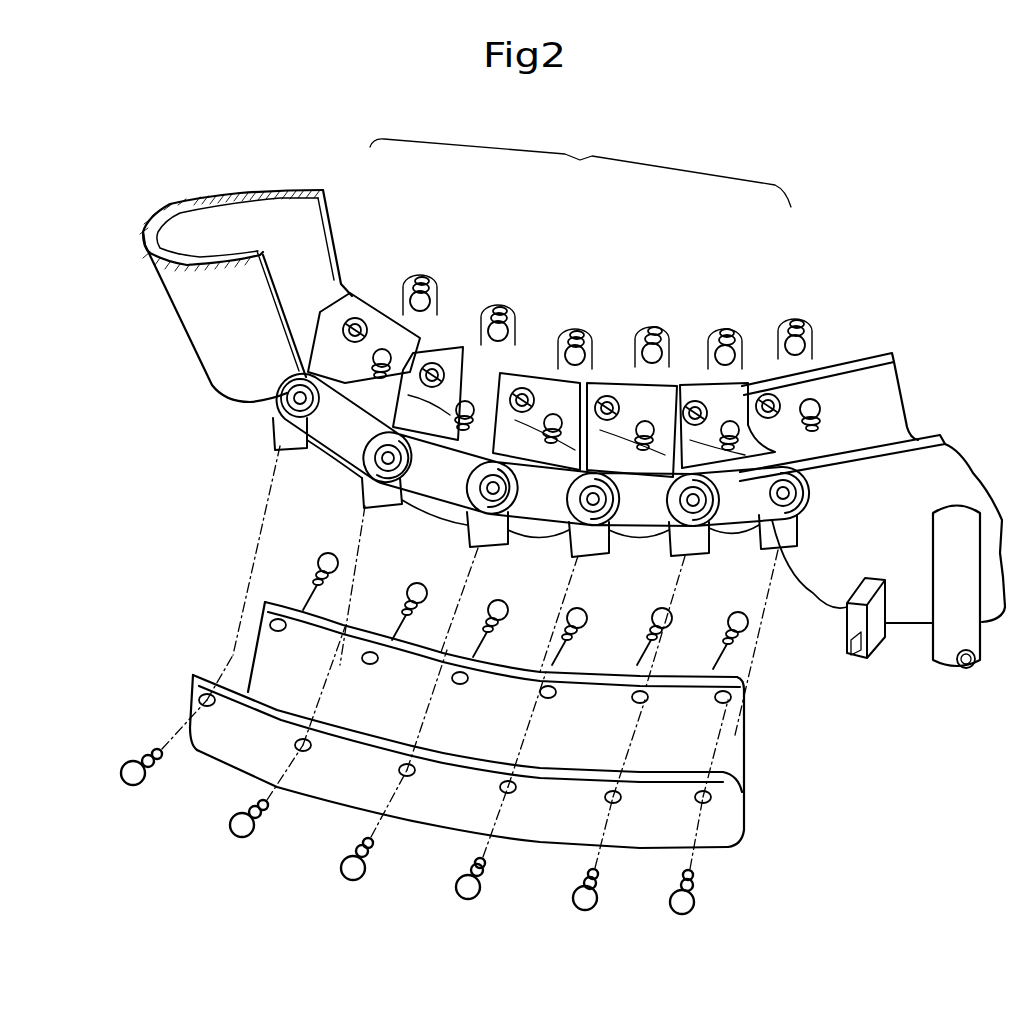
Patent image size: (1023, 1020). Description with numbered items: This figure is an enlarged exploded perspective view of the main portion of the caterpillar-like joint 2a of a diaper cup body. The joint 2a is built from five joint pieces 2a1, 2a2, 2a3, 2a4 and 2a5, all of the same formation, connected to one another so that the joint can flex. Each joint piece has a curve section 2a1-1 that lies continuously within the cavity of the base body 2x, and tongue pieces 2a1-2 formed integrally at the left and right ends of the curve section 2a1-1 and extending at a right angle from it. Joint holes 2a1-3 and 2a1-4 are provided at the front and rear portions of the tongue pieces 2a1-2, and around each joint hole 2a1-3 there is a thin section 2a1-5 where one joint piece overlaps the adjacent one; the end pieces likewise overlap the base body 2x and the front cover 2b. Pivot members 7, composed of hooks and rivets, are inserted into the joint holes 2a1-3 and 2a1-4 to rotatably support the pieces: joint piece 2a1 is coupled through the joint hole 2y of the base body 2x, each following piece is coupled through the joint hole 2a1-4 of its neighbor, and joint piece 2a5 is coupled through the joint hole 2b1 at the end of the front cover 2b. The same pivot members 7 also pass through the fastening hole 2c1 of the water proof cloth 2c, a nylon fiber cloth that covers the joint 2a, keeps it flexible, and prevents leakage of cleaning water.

The caterpillar-like joint 2a is at (580, 163).
The joint piece 2a1 is at (790, 385).
The curve section 2a1-1 is at (462, 348).
The tongue piece 2a1-2 is at (530, 455).
The joint hole 2a1-3 is at (465, 507).
The joint hole 2a1-4 is at (350, 320).
The thin section 2a1-5 is at (462, 400).
The joint piece 2a2 is at (657, 385).
The joint piece 2a3 is at (592, 385).
The joint piece 2a4 is at (462, 398).
The joint piece 2a5 is at (380, 345).
The front cover 2b is at (170, 300).
The joint hole 2b1 is at (284, 402).
The water proof cloth 2c is at (748, 816).
The fastening hole 2c1 is at (497, 793).
The base body 2x is at (893, 410).
The joint hole 2y is at (810, 398).
The pivot member 7 is at (730, 618).